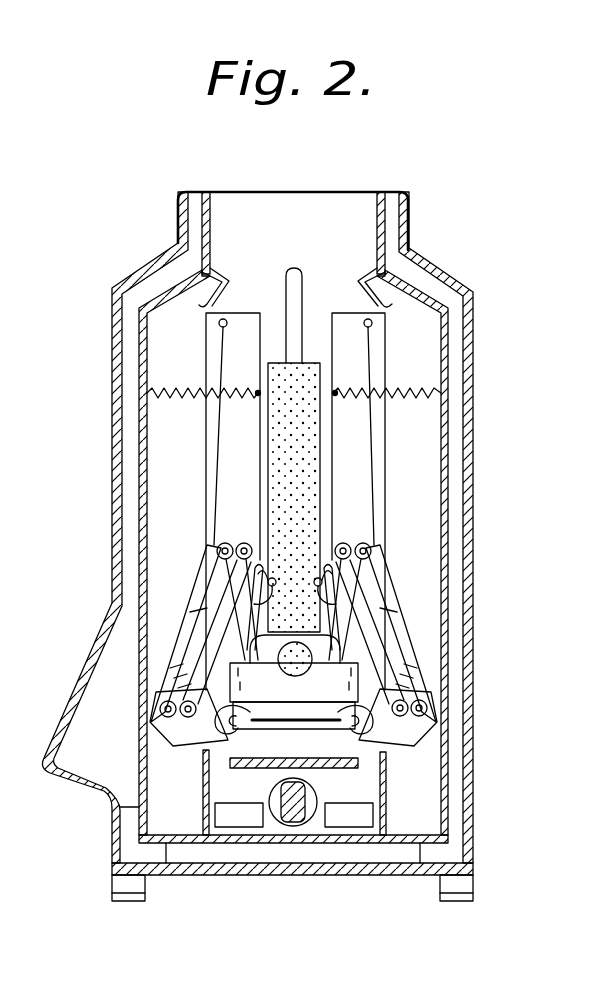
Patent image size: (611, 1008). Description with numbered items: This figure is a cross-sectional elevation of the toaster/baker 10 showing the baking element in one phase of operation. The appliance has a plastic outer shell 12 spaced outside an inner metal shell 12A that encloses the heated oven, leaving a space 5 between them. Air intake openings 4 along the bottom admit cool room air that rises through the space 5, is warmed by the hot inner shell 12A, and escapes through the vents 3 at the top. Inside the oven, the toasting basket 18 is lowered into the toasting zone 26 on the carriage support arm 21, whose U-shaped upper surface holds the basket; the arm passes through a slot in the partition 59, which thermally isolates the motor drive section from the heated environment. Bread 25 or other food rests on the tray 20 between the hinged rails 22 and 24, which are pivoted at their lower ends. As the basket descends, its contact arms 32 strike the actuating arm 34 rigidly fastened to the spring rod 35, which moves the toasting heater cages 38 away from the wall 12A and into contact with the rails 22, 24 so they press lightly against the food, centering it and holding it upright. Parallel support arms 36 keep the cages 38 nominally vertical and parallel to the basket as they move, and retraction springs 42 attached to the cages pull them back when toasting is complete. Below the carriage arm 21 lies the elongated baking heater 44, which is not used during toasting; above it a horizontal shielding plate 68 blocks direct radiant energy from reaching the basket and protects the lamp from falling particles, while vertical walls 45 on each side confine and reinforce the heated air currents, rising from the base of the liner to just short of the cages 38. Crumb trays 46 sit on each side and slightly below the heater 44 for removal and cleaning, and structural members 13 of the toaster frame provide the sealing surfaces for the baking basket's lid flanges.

The toaster/baker 10 is at (144, 223).
The partition 59 is at (220, 212).
The vents 3 is at (380, 243).
The structural members 13 is at (414, 288).
The bread 25 is at (300, 387).
The retraction springs 42 is at (158, 391).
The inner metal shell 12A is at (450, 412).
The outer shell 12 is at (470, 437).
The space 5 is at (130, 441).
The toasting zone 26 is at (158, 468).
The spring rod 35 is at (220, 484).
The hinged rail 22 is at (262, 500).
The toasting heater cages 38 is at (237, 514).
The hinged rail 24 is at (295, 567).
The toasting basket 18 is at (357, 656).
The support arms 36 is at (200, 659).
The actuating arm 34 is at (205, 735).
The tray 20 is at (373, 743).
The contact arms 32 is at (350, 724).
The carriage support arm 21 is at (212, 748).
The horizontal shielding plate 68 is at (353, 768).
The air intake openings 4 is at (120, 826).
The vertical walls 45 is at (203, 810).
The crumb trays 46 is at (243, 820).
The heating element 44 is at (296, 827).